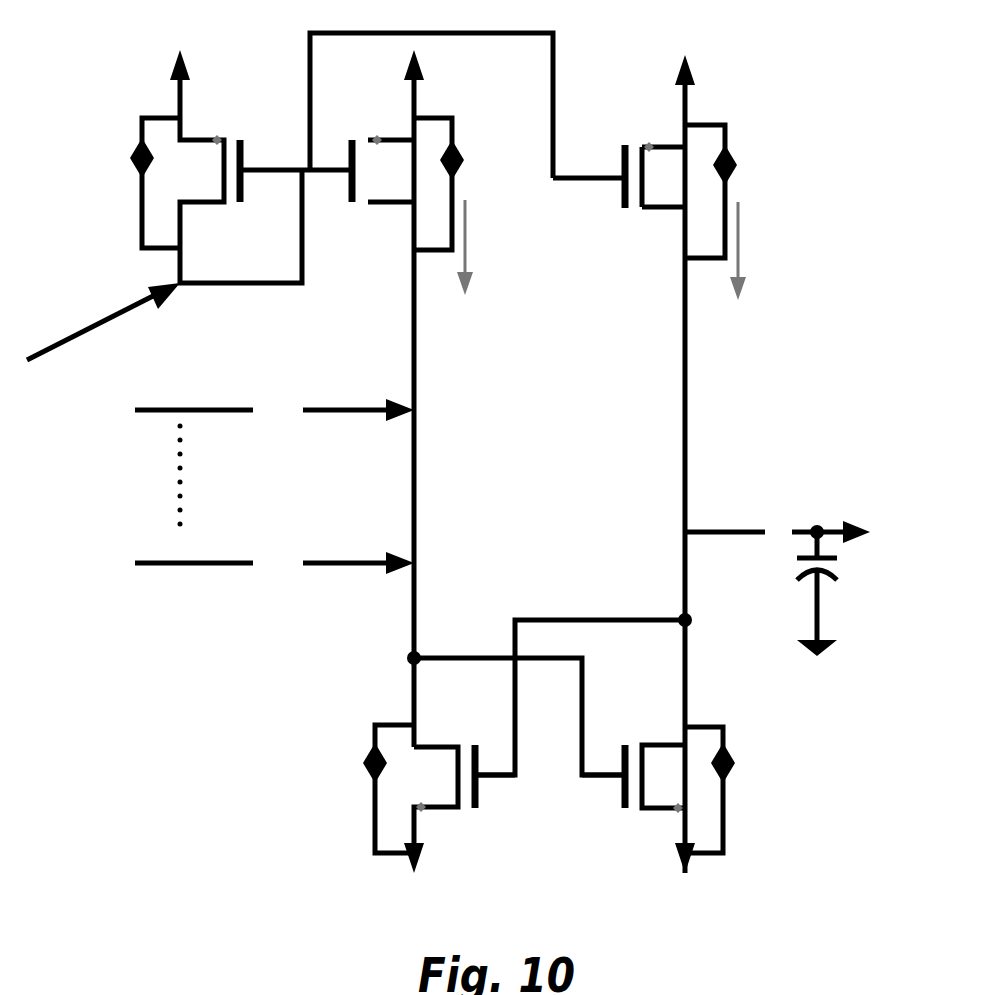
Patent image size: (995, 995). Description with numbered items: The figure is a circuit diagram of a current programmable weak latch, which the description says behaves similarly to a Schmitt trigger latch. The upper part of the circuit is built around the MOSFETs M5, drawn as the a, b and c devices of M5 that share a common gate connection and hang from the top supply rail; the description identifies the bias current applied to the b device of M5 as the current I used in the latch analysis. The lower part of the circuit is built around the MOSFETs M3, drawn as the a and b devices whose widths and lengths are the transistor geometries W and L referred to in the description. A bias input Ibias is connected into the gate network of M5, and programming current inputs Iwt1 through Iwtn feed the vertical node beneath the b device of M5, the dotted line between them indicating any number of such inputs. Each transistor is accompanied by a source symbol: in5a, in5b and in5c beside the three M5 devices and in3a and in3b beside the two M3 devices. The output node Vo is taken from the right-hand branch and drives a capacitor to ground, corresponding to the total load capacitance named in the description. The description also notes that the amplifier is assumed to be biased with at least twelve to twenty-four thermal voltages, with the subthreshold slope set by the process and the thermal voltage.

The MOSFET M5 is at (296, 133).
The MOSFET M3 is at (547, 814).
The noise current source of transistor M5a in5a is at (191, 166).
The noise current source of transistor M5b in5b is at (428, 172).
The noise current source of transistor M5c in5c is at (669, 177).
The noise current source of transistor M3a in3a is at (407, 799).
The noise current source of transistor M3b in3b is at (693, 800).
The bias current input Ibias is at (103, 321).
The weight current input 1 Iwt1 is at (274, 410).
The weight current input n Iwtn is at (274, 563).
The output voltage node with load capacitor Vo is at (777, 588).